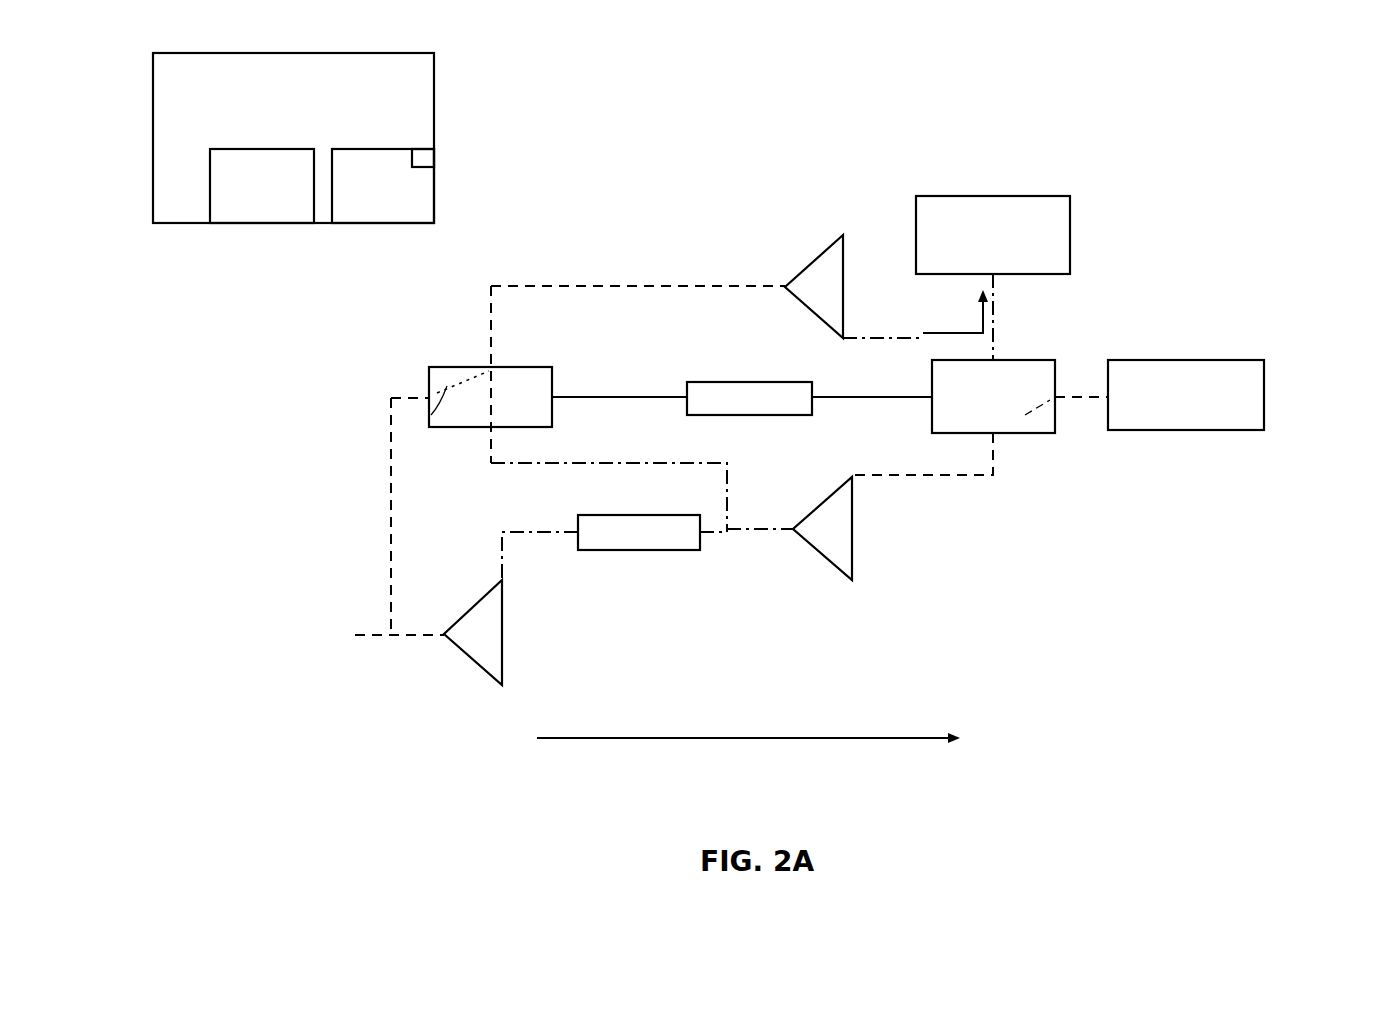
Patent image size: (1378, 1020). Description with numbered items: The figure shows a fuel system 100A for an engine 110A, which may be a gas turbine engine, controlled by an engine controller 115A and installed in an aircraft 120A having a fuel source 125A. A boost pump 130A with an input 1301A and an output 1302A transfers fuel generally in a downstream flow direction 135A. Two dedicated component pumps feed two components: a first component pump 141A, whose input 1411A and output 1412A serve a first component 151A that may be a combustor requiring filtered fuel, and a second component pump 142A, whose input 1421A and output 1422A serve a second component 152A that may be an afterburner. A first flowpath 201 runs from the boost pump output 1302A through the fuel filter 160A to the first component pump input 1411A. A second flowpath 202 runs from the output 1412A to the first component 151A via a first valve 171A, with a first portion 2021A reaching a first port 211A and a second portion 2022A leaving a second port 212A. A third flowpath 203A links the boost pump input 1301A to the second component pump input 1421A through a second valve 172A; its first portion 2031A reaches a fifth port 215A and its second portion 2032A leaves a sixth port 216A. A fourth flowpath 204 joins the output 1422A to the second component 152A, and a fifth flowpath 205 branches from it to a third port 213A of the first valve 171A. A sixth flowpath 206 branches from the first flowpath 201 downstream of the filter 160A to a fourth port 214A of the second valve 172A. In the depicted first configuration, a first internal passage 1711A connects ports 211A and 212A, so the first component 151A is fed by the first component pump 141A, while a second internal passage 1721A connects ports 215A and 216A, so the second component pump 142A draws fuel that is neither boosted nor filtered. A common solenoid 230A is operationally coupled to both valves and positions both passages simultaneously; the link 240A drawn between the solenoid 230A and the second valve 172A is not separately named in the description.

The fuel system 100A is at (1233, 88).
The aircraft 120A is at (153, 132).
The fuel source 125A is at (253, 223).
The engine 110A is at (380, 223).
The engine controller 115A is at (432, 160).
The second portion of the third flowpath 2032A is at (634, 282).
The second valve 172A is at (472, 367).
The sixth port 216A is at (492, 367).
The fifth port 215A is at (429, 397).
The second internal passage 1721A is at (431, 415).
The fourth port 214A is at (492, 428).
The sixth flowpath 206 is at (627, 467).
The third flowpath 203A is at (375, 525).
The first portion of the third flowpath 2031A is at (388, 592).
The connection line 240A is at (631, 395).
The solenoid 230A is at (740, 382).
The first valve 171A is at (932, 396).
The first internal passage 1711A is at (1023, 412).
The second port 212A is at (1052, 398).
The first port 211A is at (985, 433).
The first portion of the second flowpath 2021A is at (992, 472).
The second portion of the second flowpath 2022A is at (1105, 400).
The second flowpath 202 is at (1010, 512).
The first component 151A is at (1264, 408).
The second component pump 142A is at (818, 266).
The input of the second component pump 1421A is at (792, 288).
The output of the second component pump 1422A is at (846, 262).
The second component 152A is at (1070, 236).
The fourth flowpath 204 is at (968, 280).
The fifth flowpath 205 is at (998, 350).
The third port 213A is at (995, 360).
The first component pump 141A is at (845, 565).
The input of the first component pump 1411A is at (793, 530).
The output of the first component pump 1412A is at (852, 477).
The fuel filter 160A is at (680, 535).
The first flowpath 201 is at (553, 555).
The boost pump 130A is at (493, 660).
The output of the boost pump 1302A is at (501, 580).
The input of the boost pump 1301A is at (444, 634).
The downstream flow direction 135A is at (708, 740).